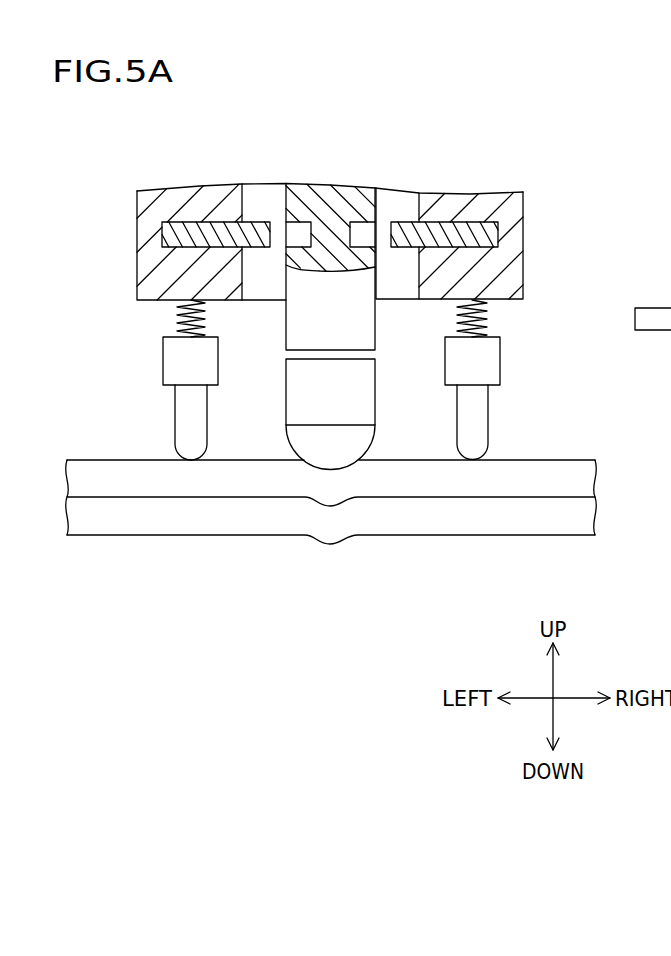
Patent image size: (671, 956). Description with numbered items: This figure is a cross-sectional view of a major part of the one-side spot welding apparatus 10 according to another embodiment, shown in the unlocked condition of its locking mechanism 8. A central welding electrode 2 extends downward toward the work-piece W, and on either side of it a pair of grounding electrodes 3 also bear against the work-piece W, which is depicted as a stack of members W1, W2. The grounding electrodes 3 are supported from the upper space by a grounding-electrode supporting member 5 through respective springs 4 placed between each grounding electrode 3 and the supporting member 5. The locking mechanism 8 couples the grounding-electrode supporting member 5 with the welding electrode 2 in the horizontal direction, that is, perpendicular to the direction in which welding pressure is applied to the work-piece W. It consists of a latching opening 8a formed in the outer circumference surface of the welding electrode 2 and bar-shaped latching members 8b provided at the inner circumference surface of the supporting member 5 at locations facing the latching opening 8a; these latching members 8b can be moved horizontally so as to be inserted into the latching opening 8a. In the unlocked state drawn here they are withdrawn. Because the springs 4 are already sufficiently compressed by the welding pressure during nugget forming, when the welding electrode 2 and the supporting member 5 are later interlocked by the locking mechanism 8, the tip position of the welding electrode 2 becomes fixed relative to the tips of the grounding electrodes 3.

The welding electrode 2 is at (378, 404).
The grounding electrodes 3 is at (173, 405).
The springs 4 is at (178, 314).
The grounding-electrode supporting member 5 is at (352, 195).
The locking mechanism 8 is at (305, 195).
The latching opening 8a is at (291, 218).
The latching members 8b is at (253, 218).
The one-side spot welding apparatus 10 is at (346, 280).
The work-piece W is at (331, 552).
The first workpiece member W1 is at (157, 484).
The second workpiece member W2 is at (185, 596).